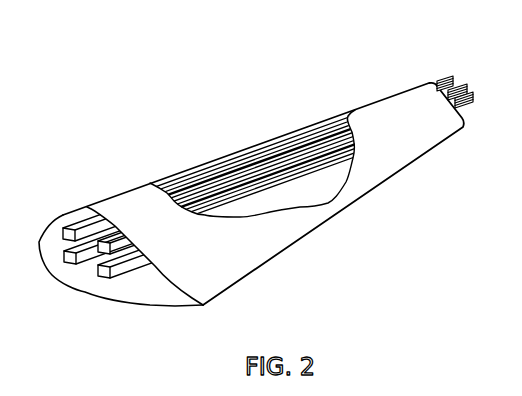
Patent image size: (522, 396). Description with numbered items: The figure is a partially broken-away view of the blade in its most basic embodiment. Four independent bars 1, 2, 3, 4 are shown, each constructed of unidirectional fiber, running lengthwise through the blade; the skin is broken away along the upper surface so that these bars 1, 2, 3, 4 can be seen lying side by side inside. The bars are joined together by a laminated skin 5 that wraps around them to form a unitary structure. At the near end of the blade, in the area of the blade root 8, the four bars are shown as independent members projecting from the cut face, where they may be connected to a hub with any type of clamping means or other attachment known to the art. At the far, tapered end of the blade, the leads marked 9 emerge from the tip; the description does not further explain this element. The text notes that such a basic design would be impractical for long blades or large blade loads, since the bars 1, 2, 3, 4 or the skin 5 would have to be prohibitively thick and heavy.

The bar 1 is at (197, 183).
The bar 2 is at (238, 177).
The bar 3 is at (282, 168).
The bar 4 is at (332, 162).
The laminated skin 5 is at (372, 170).
The blade root area 8 is at (93, 168).
The wire bundles / leads 9 is at (460, 50).